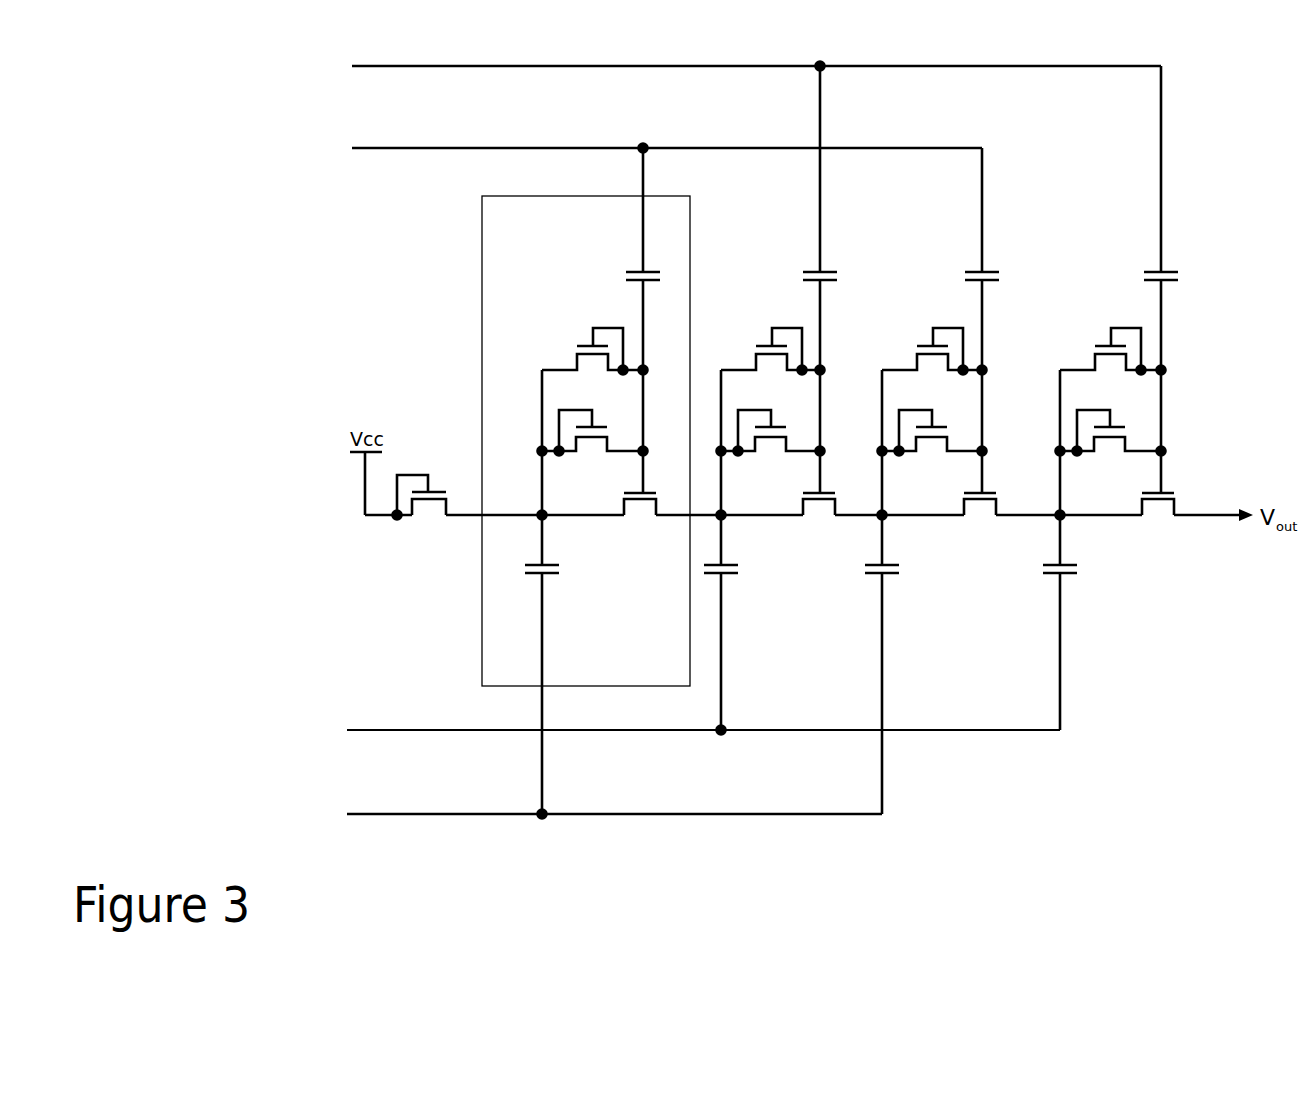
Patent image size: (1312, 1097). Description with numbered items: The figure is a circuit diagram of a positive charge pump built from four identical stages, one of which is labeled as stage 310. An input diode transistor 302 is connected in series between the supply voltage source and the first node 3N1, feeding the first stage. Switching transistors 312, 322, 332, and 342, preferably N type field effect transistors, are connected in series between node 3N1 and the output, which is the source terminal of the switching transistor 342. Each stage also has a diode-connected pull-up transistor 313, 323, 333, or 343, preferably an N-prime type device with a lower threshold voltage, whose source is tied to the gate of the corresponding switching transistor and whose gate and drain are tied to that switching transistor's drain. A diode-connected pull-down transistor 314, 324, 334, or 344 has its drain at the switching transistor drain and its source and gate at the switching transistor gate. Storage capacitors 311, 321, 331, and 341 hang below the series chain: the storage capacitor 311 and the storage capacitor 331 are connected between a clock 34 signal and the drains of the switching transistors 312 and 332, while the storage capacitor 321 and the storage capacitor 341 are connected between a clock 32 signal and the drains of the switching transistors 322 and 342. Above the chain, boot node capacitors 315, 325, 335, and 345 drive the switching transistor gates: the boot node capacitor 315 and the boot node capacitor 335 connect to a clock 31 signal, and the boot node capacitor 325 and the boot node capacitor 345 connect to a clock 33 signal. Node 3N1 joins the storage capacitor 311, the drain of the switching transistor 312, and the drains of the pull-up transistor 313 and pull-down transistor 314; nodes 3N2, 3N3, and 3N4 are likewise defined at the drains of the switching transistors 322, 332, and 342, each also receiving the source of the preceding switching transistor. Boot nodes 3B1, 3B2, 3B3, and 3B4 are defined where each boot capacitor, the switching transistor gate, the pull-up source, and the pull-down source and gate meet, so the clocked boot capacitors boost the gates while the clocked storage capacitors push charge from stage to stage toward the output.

The clock signal 31 is at (638, 133).
The clock signal 32 is at (675, 714).
The clock signal 33 is at (728, 52).
The clock signal 34 is at (586, 797).
The input diode transistor 302 is at (436, 493).
The stage 310 is at (566, 441).
The storage capacitor 311 is at (554, 580).
The switching transistor 312 is at (655, 491).
The pull-up transistor 313 is at (593, 428).
The pull-down transistor 314 is at (592, 351).
The boot node capacitor 315 is at (656, 263).
The node 3N1 is at (567, 594).
The boot node 3B1 is at (663, 319).
The storage capacitor 321 is at (733, 580).
The switching transistor 322 is at (833, 491).
The pull-up transistor 323 is at (771, 428).
The pull-down transistor 324 is at (770, 351).
The boot node capacitor 325 is at (833, 263).
The node 3N2 is at (746, 552).
The boot node 3B2 is at (840, 278).
The storage capacitor 331 is at (894, 580).
The switching transistor 332 is at (994, 491).
The pull-up transistor 333 is at (932, 428).
The pull-down transistor 334 is at (931, 351).
The boot node capacitor 335 is at (995, 263).
The node 3N3 is at (907, 592).
The boot node 3B3 is at (1003, 320).
The storage capacitor 341 is at (1072, 580).
The switching transistor 342 is at (1173, 491).
The pull-up transistor 343 is at (1111, 428).
The pull-down transistor 344 is at (1110, 351).
The boot node capacitor 345 is at (1174, 263).
The node 3N4 is at (1085, 550).
The boot node 3B4 is at (1182, 279).